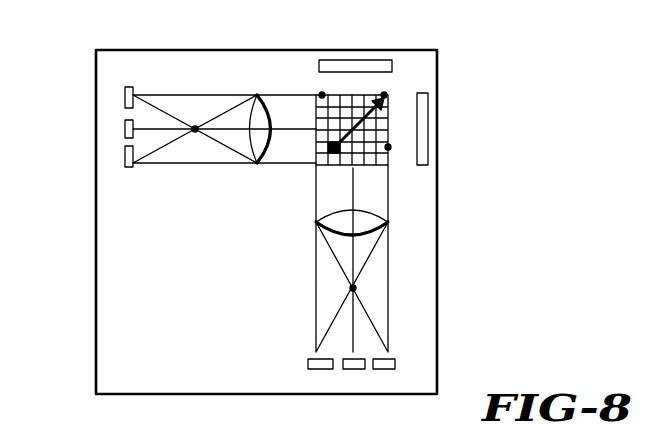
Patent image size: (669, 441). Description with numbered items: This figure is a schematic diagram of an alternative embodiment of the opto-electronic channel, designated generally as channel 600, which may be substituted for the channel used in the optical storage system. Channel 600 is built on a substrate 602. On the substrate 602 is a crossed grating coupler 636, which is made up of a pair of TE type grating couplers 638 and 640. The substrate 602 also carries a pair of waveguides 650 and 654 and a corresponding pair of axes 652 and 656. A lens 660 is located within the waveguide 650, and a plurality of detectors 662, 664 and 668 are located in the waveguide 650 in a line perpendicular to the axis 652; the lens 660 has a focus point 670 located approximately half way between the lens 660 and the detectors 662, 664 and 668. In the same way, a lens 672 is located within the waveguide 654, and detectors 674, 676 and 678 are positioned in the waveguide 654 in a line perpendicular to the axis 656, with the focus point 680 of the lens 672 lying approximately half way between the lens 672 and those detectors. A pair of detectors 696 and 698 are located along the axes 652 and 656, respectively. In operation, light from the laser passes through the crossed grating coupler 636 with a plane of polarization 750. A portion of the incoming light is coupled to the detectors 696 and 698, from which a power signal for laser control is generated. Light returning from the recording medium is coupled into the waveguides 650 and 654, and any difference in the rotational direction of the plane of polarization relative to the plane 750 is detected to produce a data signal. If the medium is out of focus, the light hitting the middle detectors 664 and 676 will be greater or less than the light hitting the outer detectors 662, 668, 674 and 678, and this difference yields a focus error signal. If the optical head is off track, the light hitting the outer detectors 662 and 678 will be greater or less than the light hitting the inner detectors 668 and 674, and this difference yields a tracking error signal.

The optical channel 600 is at (77, 270).
The substrate 602 is at (96, 73).
The detector 662 is at (124, 97).
The detector 664 is at (124, 130).
The detector 668 is at (124, 160).
The waveguide 650 is at (207, 72).
The axis 652 is at (282, 129).
The focus point 670 is at (195, 132).
The lens 660 is at (257, 165).
The TE type grating coupler 640 is at (322, 95).
The plane of polarization 750 is at (387, 103).
The crossed grating coupler 636 is at (385, 95).
The TE type grating coupler 638 is at (391, 148).
The detector 698 is at (358, 60).
The detector 696 is at (428, 126).
The axis 656 is at (355, 197).
The waveguide 654 is at (389, 305).
The lens 672 is at (317, 222).
The focus point 680 is at (352, 288).
The detector 674 is at (309, 369).
The detector 676 is at (355, 369).
The detector 678 is at (386, 369).